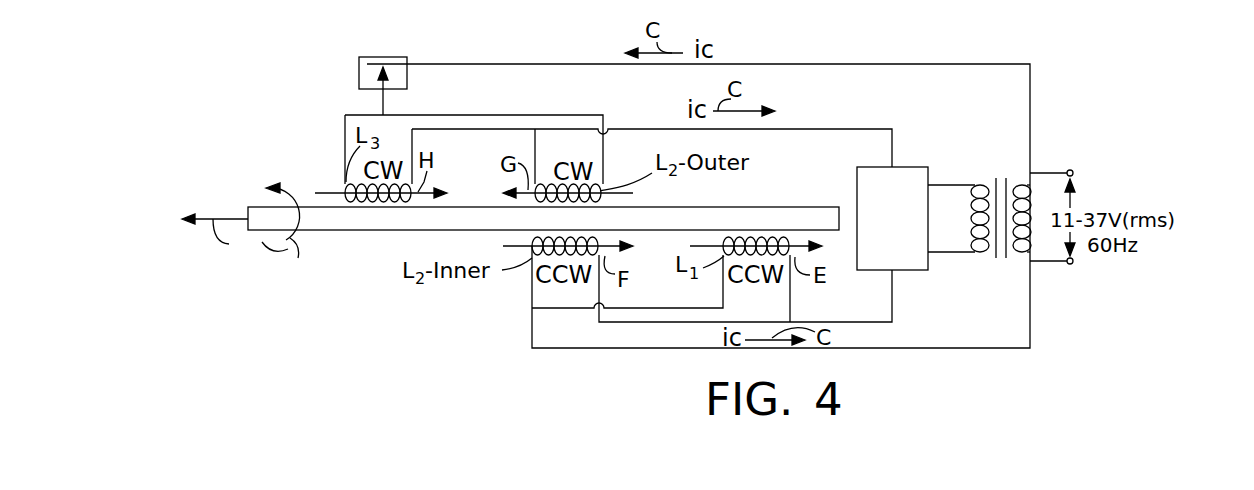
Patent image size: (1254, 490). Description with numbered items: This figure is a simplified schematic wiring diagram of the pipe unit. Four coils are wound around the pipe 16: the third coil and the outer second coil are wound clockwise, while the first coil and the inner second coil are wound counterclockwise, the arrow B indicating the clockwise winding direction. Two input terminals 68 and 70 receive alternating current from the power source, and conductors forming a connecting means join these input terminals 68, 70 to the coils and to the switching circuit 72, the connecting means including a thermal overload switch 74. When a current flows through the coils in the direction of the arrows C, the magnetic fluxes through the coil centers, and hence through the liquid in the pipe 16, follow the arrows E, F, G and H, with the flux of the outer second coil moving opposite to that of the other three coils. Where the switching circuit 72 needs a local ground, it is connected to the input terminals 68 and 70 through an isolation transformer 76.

The pipe 16 is at (333, 222).
The input terminal 68 is at (1067, 170).
The input terminal 70 is at (1068, 264).
The switching circuit 72 is at (880, 166).
The thermal overload switch 74 is at (387, 56).
The isolation transformer 76 is at (1001, 254).